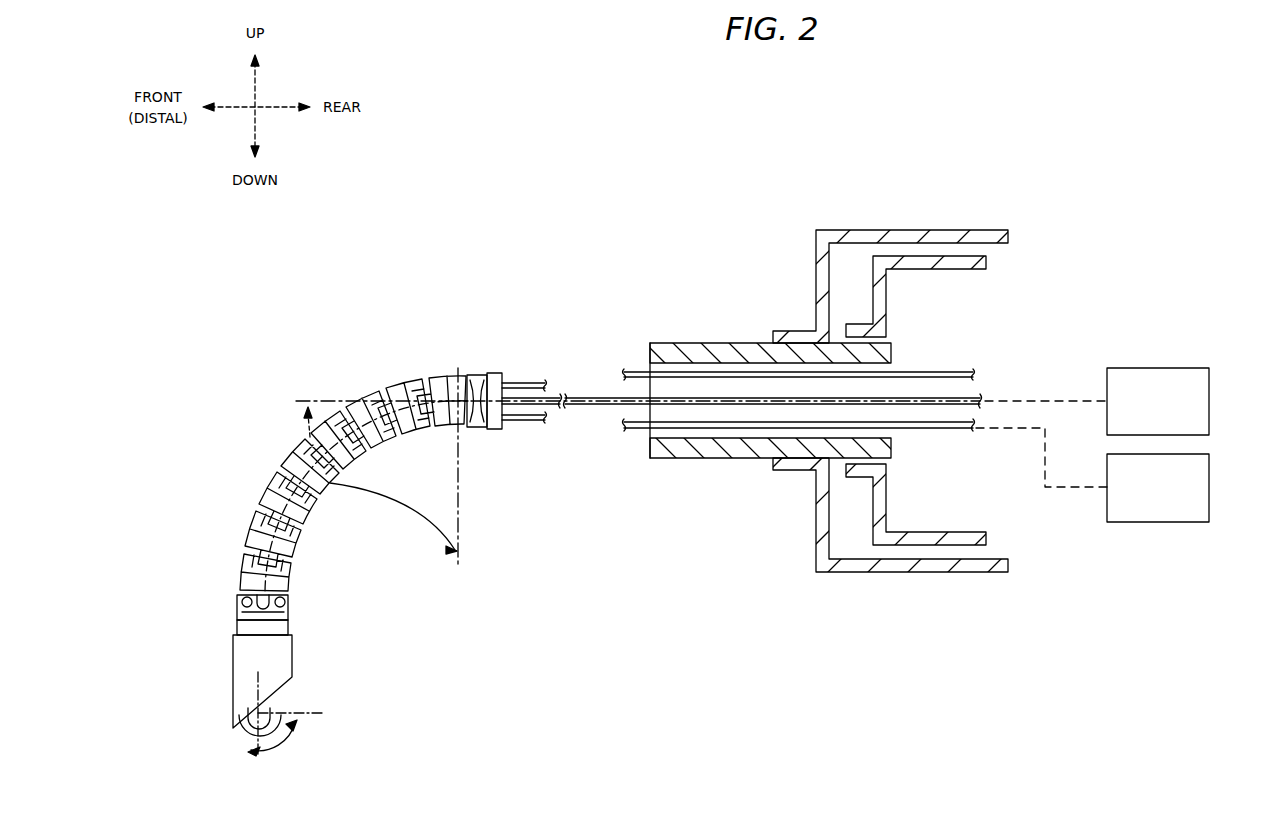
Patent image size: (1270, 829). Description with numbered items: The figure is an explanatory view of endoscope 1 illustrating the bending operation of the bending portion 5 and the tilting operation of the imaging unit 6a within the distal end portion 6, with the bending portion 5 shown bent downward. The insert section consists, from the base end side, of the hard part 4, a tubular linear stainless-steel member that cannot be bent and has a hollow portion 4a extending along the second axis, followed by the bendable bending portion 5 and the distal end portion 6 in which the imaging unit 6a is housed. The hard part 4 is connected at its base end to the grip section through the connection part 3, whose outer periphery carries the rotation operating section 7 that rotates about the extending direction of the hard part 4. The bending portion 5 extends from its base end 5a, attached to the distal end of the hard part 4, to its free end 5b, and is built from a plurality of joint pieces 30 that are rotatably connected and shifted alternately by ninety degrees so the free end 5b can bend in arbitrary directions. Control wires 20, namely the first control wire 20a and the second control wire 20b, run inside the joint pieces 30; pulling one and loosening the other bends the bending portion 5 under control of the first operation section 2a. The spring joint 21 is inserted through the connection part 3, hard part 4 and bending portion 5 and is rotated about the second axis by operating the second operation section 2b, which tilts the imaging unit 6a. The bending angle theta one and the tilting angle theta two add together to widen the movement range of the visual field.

The endoscope 1 is at (644, 293).
The first operation section 2a is at (1158, 522).
The second operation section 2b is at (1155, 368).
The connection part 3 is at (913, 256).
The hard part 4 is at (660, 460).
The hollow portion 4a is at (756, 390).
The bending portion 5 is at (361, 386).
The base end 5a is at (478, 372).
The free end 5b is at (237, 612).
The distal end portion 6 is at (285, 653).
The imaging unit 6a is at (246, 730).
The rotation operating section 7 is at (826, 230).
The control wires 20 is at (758, 403).
The first control wire 20a is at (694, 362).
The second control wire 20b is at (727, 440).
The spring joint 21 is at (598, 408).
The joint pieces 30 is at (282, 473).